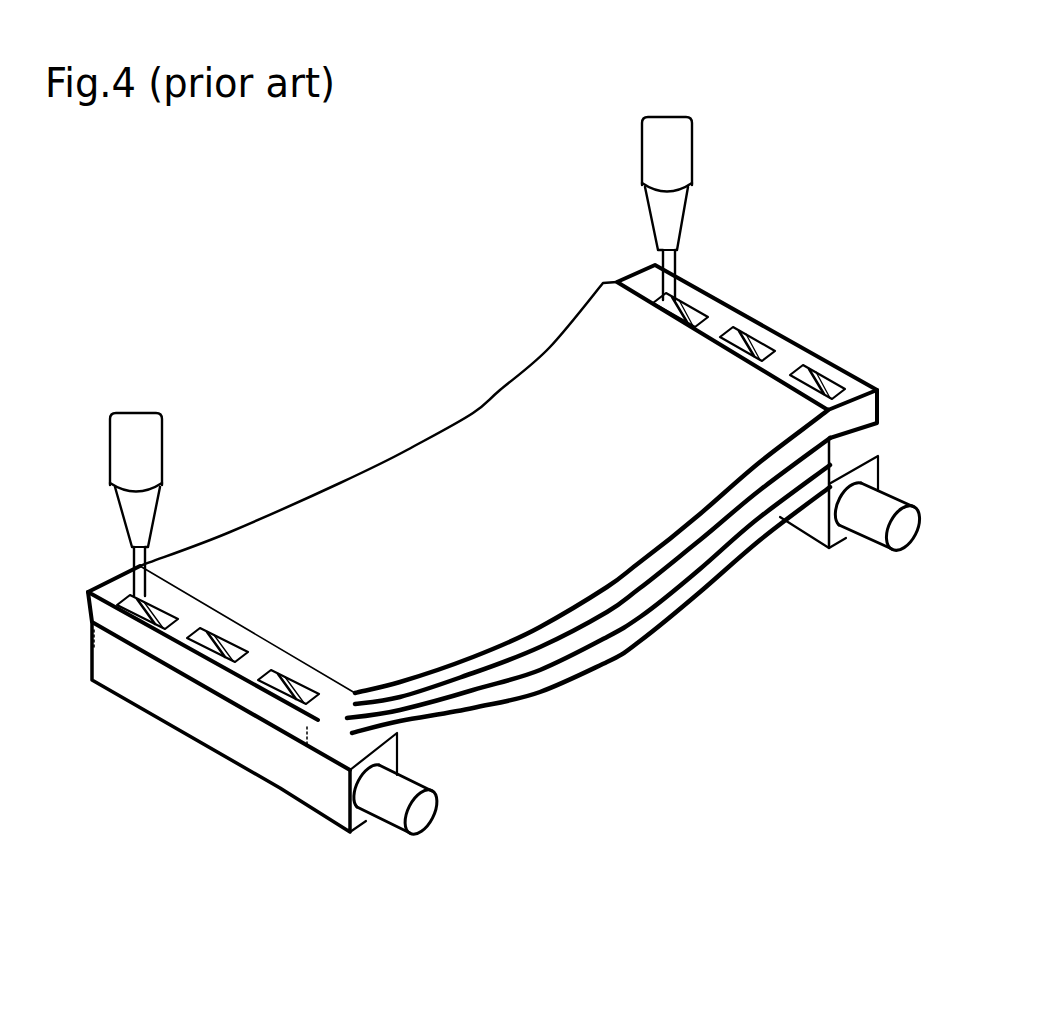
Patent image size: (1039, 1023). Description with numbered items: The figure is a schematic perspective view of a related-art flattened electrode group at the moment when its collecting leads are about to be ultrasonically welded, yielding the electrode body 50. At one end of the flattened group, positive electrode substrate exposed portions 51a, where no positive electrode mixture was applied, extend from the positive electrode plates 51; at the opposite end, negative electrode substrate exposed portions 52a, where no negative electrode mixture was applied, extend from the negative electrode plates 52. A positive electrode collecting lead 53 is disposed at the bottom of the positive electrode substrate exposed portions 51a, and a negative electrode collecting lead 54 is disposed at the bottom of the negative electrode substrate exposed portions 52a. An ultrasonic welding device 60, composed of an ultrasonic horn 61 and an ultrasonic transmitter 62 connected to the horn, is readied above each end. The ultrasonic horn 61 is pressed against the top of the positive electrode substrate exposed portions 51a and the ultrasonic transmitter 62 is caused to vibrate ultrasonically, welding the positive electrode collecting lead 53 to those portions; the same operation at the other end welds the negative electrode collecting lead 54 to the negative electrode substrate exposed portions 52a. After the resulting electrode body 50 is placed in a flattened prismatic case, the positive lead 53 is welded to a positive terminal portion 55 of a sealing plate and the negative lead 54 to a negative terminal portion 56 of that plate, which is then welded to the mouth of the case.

The electrode body 50 is at (481, 342).
The positive electrode plate 51 is at (385, 483).
The positive electrode substrate exposed portion 51a is at (180, 627).
The negative electrode plate 52 is at (688, 550).
The negative electrode substrate exposed portion 52a is at (790, 358).
The positive electrode collecting lead 53 is at (407, 753).
The negative electrode collecting lead 54 is at (810, 517).
The positive terminal portion 55 is at (423, 807).
The negative terminal portion 56 is at (879, 517).
The ultrasonic welding device 60 is at (139, 420).
The ultrasonic horn 61 is at (142, 510).
The ultrasonic transmitter 62 is at (148, 443).